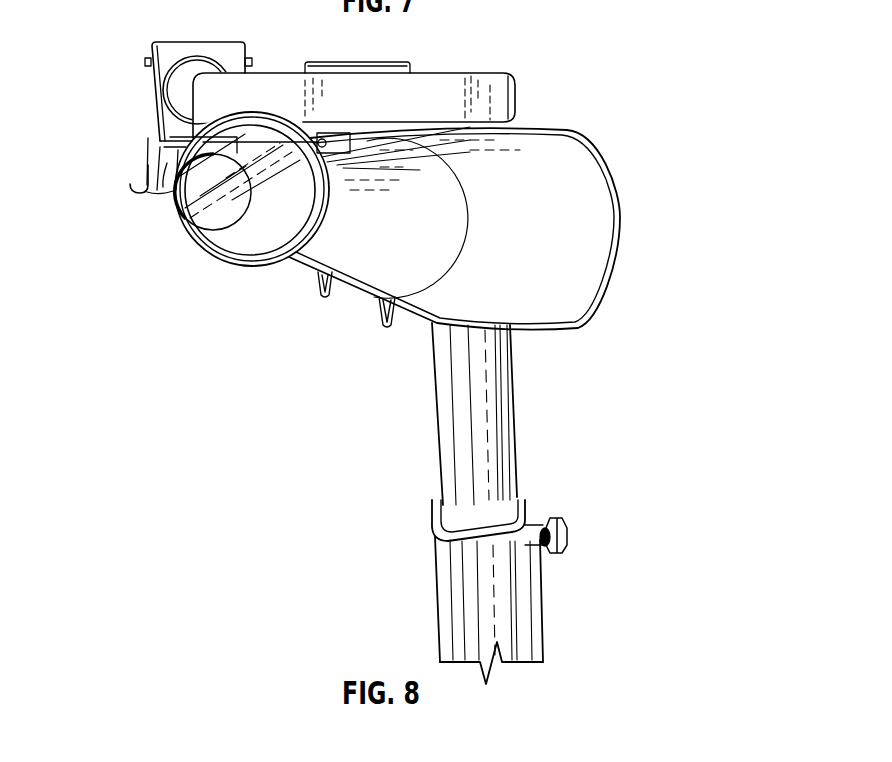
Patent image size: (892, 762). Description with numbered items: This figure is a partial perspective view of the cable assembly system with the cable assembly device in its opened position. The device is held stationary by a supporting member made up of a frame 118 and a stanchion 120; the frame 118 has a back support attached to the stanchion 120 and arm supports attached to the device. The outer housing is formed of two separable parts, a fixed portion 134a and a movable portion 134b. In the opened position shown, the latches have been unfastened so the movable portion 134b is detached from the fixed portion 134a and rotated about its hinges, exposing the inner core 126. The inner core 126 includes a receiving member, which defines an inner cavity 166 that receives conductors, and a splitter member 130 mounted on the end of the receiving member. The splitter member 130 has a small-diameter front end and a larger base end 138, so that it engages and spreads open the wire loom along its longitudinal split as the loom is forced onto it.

The frame 118 is at (475, 85).
The stanchion 120 is at (502, 427).
The inner core 126 is at (170, 213).
The splitter member 130 is at (163, 55).
The fixed portion 134a is at (147, 188).
The movable portion 134b is at (607, 165).
The base end 138 is at (210, 208).
The inner cavity 166 is at (273, 222).